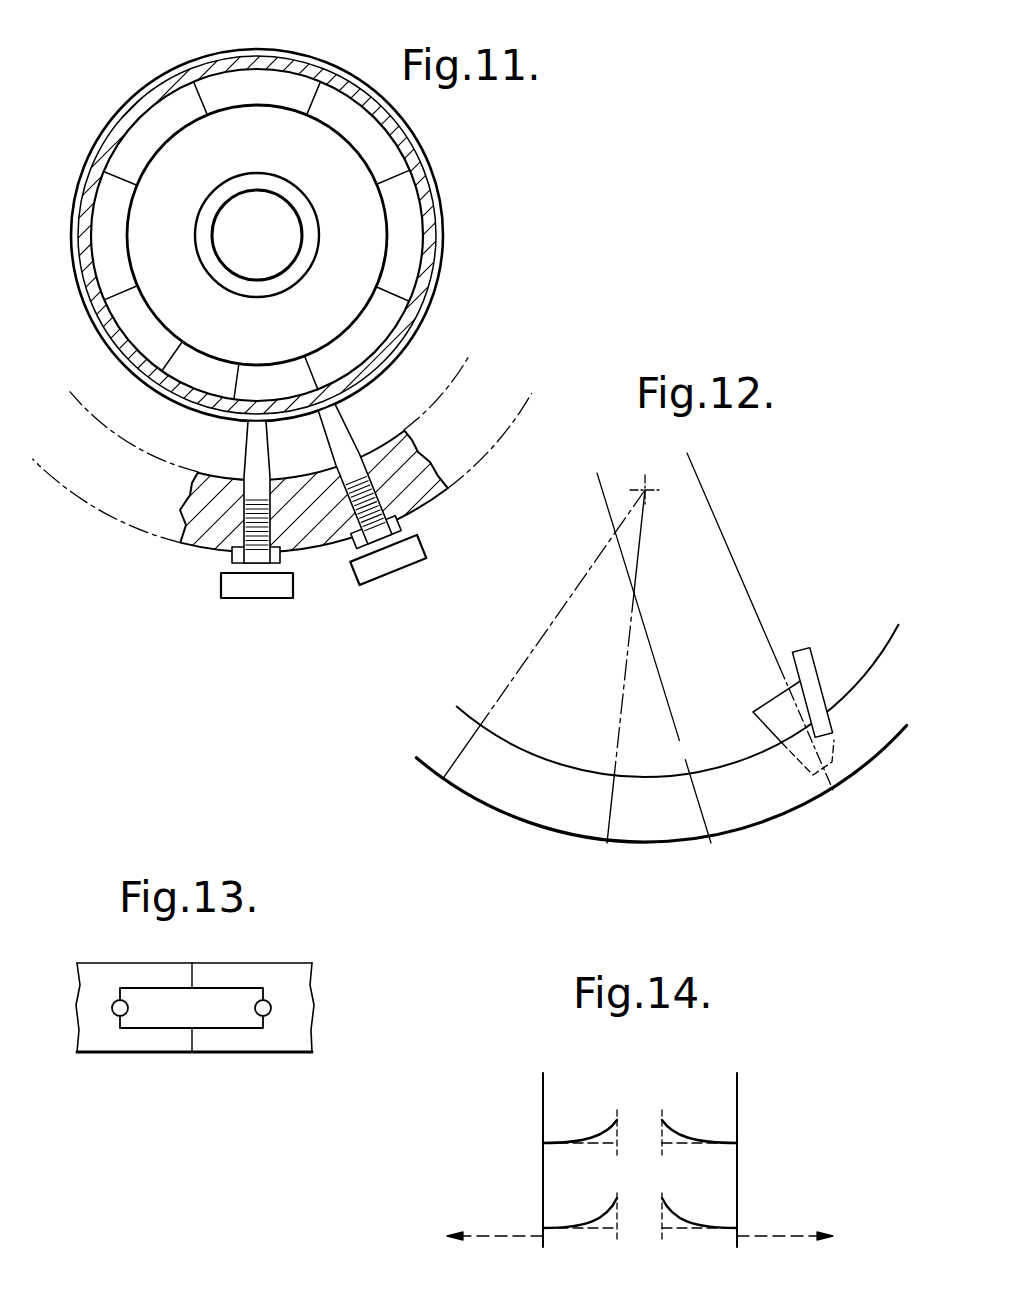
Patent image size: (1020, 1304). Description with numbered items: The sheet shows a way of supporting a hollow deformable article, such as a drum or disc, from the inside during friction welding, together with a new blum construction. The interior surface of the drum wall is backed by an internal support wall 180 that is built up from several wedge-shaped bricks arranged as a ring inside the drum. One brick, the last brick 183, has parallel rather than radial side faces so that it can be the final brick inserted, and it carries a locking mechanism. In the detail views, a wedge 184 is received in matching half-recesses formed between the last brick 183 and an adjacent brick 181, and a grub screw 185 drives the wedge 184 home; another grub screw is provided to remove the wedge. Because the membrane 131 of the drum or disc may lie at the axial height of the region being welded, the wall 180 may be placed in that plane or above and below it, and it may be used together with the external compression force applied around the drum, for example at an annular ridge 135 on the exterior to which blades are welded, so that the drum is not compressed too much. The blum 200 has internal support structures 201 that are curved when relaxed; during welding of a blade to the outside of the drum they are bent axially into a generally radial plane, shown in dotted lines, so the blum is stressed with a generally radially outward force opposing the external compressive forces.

In FIG. 11, the membrane 131 is at (272, 145).
In FIG. 11, the annular ridge 135 is at (437, 184).
In FIG. 11, the internal support wall 180 is at (339, 235).
In FIG. 11, the adjacent brick 181 is at (105, 262).
In FIG. 12, the adjacent brick 181 is at (558, 806).
In FIG. 11, the last brick 183 is at (203, 378).
In FIG. 12, the last brick 183 is at (758, 810).
In FIG. 12, the wedge 184 is at (781, 710).
In FIG. 13, the wedge 184 is at (225, 1015).
In FIG. 12, the grub screw 185 is at (812, 668).
In FIG. 14, the blum 200 is at (748, 1110).
In FIG. 14, the internal support structures 201 is at (678, 1127).